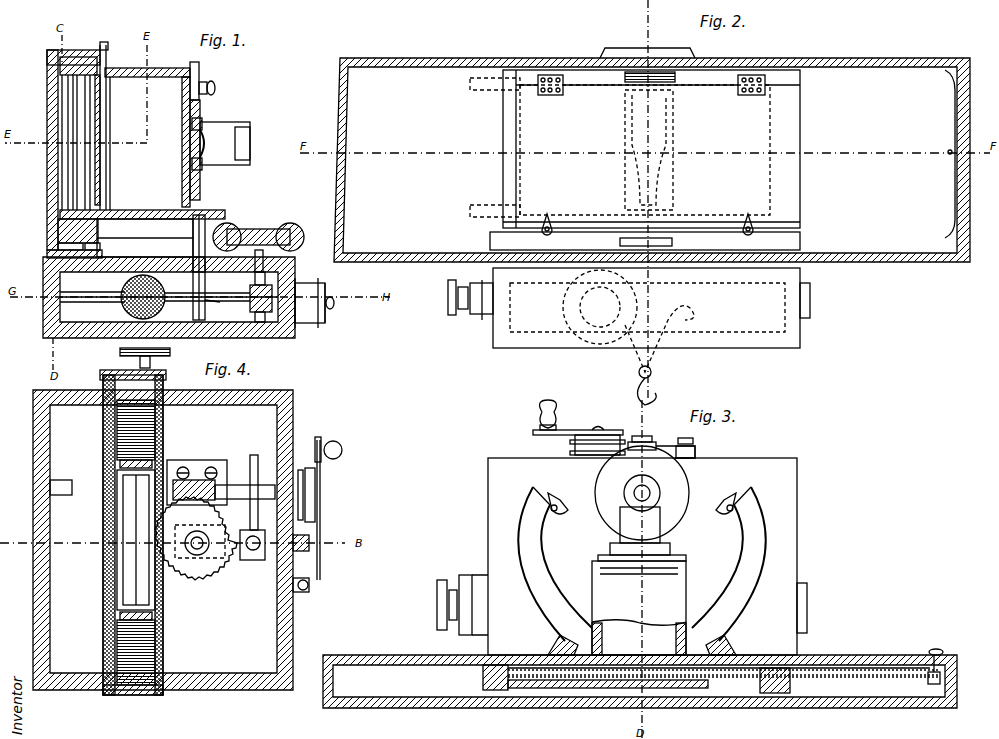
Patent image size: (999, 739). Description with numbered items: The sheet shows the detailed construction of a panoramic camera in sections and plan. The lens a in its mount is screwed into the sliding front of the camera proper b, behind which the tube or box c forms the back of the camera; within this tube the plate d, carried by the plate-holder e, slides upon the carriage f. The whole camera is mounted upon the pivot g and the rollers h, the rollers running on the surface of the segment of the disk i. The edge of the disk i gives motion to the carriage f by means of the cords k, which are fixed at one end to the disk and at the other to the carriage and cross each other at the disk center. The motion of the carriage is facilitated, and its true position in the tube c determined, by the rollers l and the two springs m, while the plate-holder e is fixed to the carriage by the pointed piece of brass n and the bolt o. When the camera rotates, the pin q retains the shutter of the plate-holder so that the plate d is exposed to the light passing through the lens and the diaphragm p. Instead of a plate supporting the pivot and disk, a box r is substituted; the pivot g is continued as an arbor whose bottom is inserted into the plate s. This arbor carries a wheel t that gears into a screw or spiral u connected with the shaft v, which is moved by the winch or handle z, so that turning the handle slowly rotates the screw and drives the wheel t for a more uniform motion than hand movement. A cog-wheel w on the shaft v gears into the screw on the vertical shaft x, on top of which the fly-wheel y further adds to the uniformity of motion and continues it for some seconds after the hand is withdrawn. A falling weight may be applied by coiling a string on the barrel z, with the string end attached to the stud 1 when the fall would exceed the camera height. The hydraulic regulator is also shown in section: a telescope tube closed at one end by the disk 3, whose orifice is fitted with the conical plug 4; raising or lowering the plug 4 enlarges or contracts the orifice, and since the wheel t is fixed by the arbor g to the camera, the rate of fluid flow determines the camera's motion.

In FIG. 1, the lens a is at (81, 142).
In FIG. 1, the camera proper b is at (118, 146).
In FIG. 1, the tube or box forming the back of the camera c is at (75, 58).
In FIG. 2, the tube or box forming the back of the camera c is at (652, 160).
In FIG. 3, the tube or box forming the back of the camera c is at (640, 681).
In FIG. 4, the tube or box forming the back of the camera c is at (163, 540).
In FIG. 1, the plate d is at (169, 297).
In FIG. 1, the plate-holder e is at (55, 224).
In FIG. 2, the plate-holder e is at (651, 154).
In FIG. 1, the carriage f is at (58, 246).
In FIG. 2, the carriage f is at (645, 241).
In FIG. 1, the pivot g is at (202, 267).
In FIG. 3, the rollers h is at (639, 608).
In FIG. 3, the disk i is at (641, 564).
In FIG. 3, the cords k is at (560, 497).
In FIG. 1, the rollers l is at (165, 210).
In FIG. 2, the rollers l is at (652, 231).
In FIG. 4, the rollers l is at (196, 538).
In FIG. 1, the springs m is at (169, 297).
In FIG. 1, the pointed piece of brass n is at (261, 295).
In FIG. 2, the bolt o is at (629, 331).
In FIG. 2, the diaphragm p is at (647, 47).
In FIG. 2, the pin q is at (950, 154).
In FIG. 2, the box r is at (620, 195).
In FIG. 3, the box r is at (642, 556).
In FIG. 4, the plate s is at (133, 532).
In FIG. 1, the wheel t is at (60, 253).
In FIG. 4, the screw or spiral u is at (221, 482).
In FIG. 1, the shaft v is at (145, 238).
In FIG. 1, the cog-wheel w is at (220, 131).
In FIG. 3, the cog-wheel w is at (642, 534).
In FIG. 4, the cog-wheel w is at (253, 507).
In FIG. 1, the vertical shaft x is at (314, 303).
In FIG. 4, the vertical shaft x is at (317, 514).
In FIG. 1, the fly-wheel y is at (260, 233).
In FIG. 3, the fly-wheel y is at (642, 493).
In FIG. 4, the fly-wheel y is at (61, 488).
In FIG. 3, the winch or handle z is at (579, 427).
In FIG. 3, the stud 1 is at (661, 448).
In FIG. 3, the disk 3 is at (702, 673).
In FIG. 3, the conical plug 4 is at (642, 645).